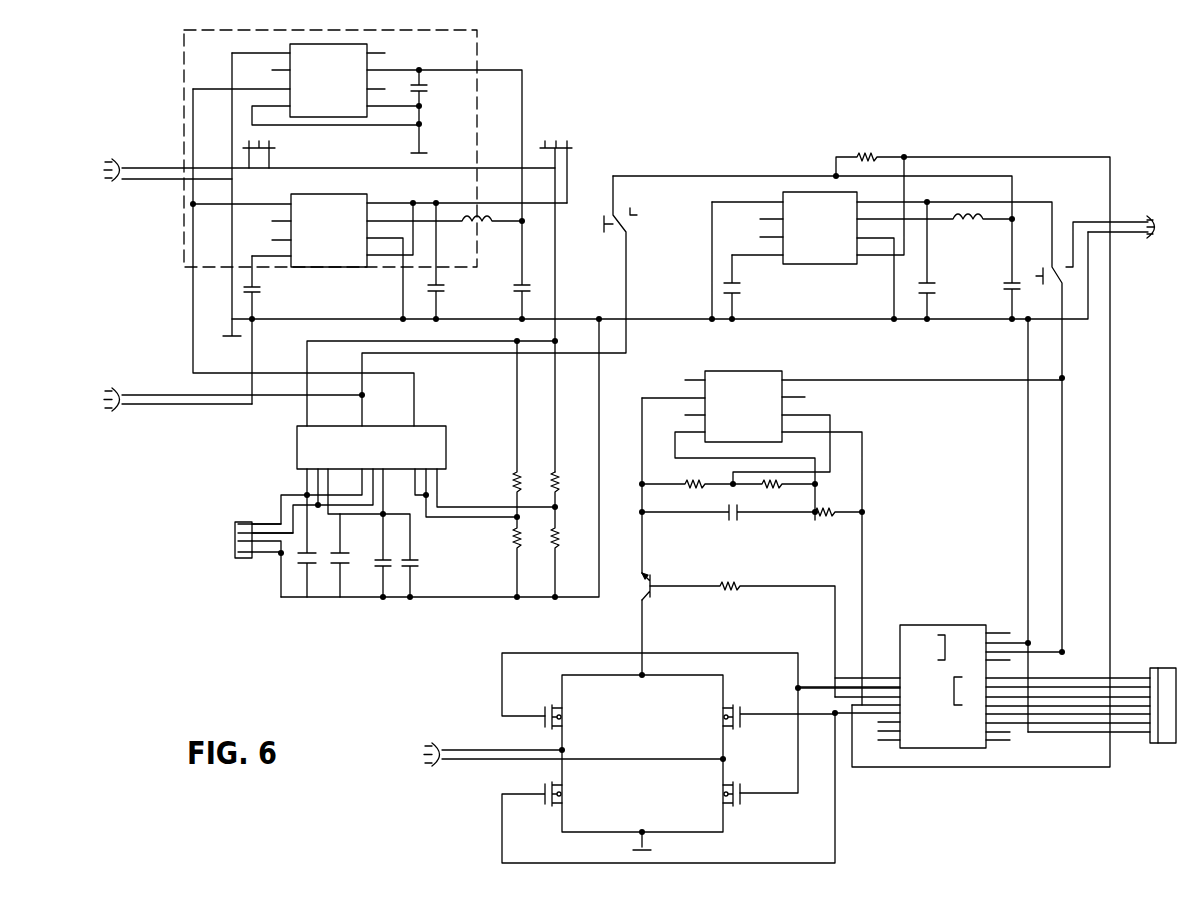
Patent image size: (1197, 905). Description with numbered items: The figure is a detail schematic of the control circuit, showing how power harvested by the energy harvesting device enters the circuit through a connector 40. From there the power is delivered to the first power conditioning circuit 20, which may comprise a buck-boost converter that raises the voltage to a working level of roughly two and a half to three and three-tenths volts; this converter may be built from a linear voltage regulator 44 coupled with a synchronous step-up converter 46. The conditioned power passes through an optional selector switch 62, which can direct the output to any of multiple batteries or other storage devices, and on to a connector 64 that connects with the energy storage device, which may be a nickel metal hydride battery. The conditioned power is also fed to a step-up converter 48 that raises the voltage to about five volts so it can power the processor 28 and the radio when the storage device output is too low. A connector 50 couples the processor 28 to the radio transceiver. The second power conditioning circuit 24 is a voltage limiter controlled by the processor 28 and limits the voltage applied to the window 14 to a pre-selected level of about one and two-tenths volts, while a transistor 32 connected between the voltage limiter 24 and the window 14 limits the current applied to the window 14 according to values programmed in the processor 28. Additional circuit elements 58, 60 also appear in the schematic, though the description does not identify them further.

The H-bridge motor driver 14 is at (703, 820).
The power supply section 20 is at (478, 58).
The sensor / amplifier circuit 24 is at (743, 385).
The microcontroller 28 is at (925, 638).
The transistor switch 32 is at (634, 588).
The power input connector 40 is at (106, 168).
The voltage regulator 44 is at (300, 88).
The voltage regulator 46 is at (300, 232).
The voltage regulator / driver 48 is at (808, 212).
The output connector 50 is at (1159, 667).
The motor connector 58 is at (428, 731).
The input connector 60 is at (108, 380).
The communication interface circuit 62 is at (312, 448).
The communication connector 64 is at (237, 540).